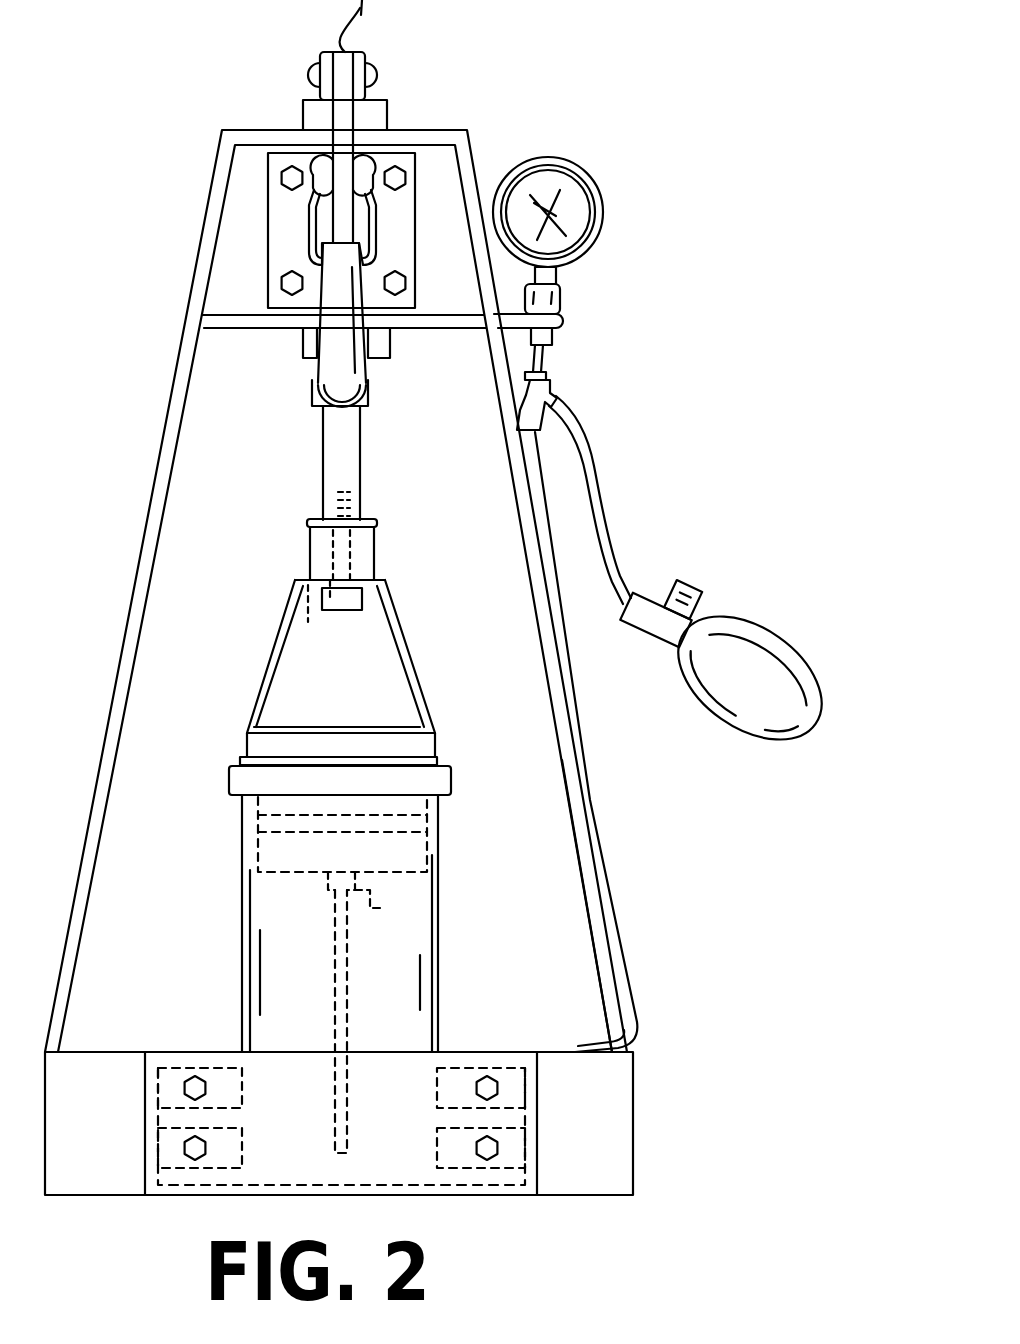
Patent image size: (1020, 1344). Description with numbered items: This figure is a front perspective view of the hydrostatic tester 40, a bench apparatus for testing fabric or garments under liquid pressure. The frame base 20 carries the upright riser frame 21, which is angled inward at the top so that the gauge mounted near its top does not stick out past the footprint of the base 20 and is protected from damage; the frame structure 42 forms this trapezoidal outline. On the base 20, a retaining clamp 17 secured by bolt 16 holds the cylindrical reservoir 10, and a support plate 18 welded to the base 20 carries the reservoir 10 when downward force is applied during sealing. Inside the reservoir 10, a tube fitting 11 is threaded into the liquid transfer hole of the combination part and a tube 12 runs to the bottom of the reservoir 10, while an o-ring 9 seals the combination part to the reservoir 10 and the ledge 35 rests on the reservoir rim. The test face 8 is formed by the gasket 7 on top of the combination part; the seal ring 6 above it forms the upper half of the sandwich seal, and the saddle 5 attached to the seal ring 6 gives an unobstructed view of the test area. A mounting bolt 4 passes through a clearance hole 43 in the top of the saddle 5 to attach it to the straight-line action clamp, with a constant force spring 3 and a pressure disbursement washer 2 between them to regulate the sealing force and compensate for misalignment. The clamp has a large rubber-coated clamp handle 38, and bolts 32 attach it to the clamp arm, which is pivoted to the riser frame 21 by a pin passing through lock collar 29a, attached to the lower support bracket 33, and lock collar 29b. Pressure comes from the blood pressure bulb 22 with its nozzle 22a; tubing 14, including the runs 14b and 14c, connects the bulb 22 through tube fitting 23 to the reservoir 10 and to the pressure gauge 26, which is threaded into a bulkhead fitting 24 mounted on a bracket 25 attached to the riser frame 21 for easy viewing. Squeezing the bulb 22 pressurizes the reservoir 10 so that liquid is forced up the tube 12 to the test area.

The hydrostatic tester 40 is at (230, 95).
The frame 42 is at (170, 402).
The riser frame 21 is at (592, 933).
The bracket 33 is at (237, 330).
The bolts 32 is at (398, 186).
The lock collar 29b is at (390, 106).
The lock collar 29a is at (378, 358).
The clamp handle 38 is at (330, 382).
The pressure disbursement washer 2 is at (365, 516).
The constant force spring 3 is at (378, 555).
The clearance hole 43 is at (311, 623).
The mounting bolt 4 is at (355, 612).
The saddle 5 is at (418, 692).
The seal ring 6 is at (246, 738).
The gasket 7 is at (445, 760).
The test face 8 is at (455, 780).
The ledge 35 is at (235, 797).
The reservoir 10 is at (238, 968).
The o-ring 9 is at (330, 826).
The tube fitting 11 is at (372, 912).
The tube 12 is at (345, 1000).
The frame base 20 is at (625, 1178).
The support plate 18 is at (148, 1182).
The retaining clamp 17 is at (160, 1080).
The bolt 16 is at (498, 1088).
The pressure gauge 26 is at (603, 212).
The bulkhead fitting 24 is at (565, 305).
The bracket 25 is at (575, 326).
The tube 14c is at (548, 365).
The tube fitting 23 is at (558, 392).
The hose 14b is at (603, 480).
The nozzle 22a is at (686, 577).
The blood pressure bulb 22 is at (770, 658).
The tubing 14 is at (598, 798).